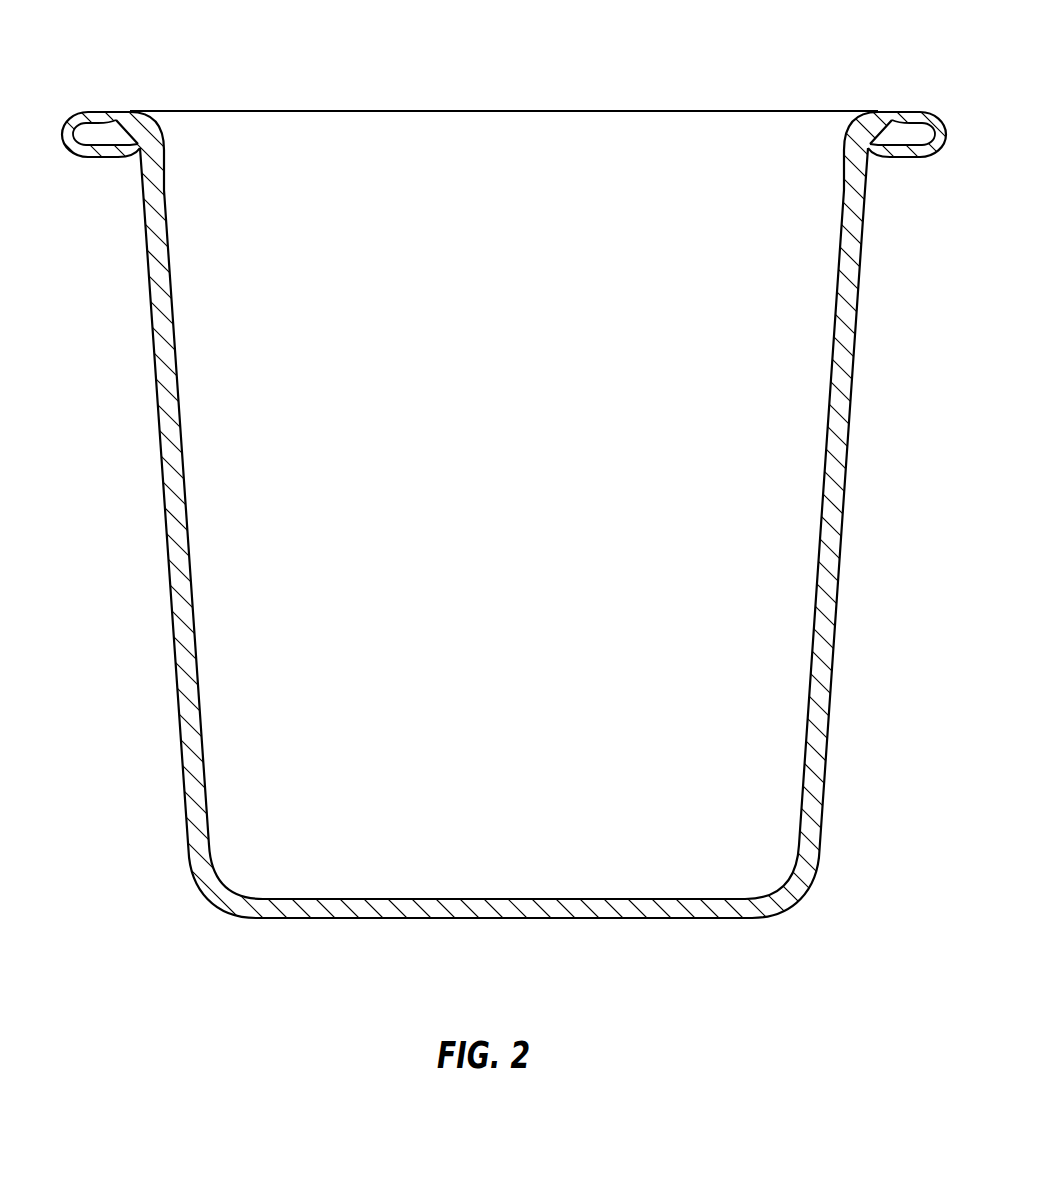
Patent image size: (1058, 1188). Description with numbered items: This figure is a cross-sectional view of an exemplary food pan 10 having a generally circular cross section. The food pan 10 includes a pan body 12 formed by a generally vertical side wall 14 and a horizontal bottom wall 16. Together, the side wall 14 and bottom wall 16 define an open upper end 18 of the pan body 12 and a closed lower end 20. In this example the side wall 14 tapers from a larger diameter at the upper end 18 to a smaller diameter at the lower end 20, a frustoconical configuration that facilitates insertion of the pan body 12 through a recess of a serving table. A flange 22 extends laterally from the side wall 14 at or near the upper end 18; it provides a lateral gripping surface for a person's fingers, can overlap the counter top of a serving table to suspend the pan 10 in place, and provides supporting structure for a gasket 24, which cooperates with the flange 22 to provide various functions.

The food pan 10 is at (140, 618).
The pan body 12 is at (516, 551).
The side wall 14 is at (835, 405).
The bottom wall 16 is at (587, 910).
The open upper end 18 is at (675, 55).
The closed lower end 20 is at (817, 888).
The flange 22 is at (126, 127).
The gasket 24 is at (67, 125).